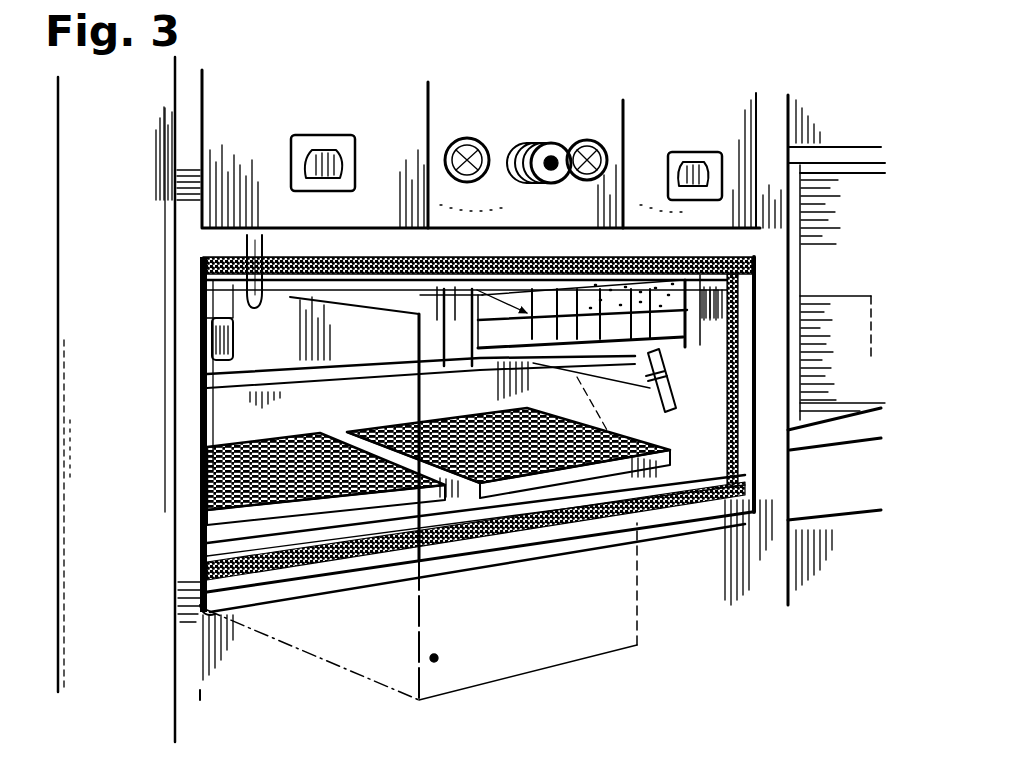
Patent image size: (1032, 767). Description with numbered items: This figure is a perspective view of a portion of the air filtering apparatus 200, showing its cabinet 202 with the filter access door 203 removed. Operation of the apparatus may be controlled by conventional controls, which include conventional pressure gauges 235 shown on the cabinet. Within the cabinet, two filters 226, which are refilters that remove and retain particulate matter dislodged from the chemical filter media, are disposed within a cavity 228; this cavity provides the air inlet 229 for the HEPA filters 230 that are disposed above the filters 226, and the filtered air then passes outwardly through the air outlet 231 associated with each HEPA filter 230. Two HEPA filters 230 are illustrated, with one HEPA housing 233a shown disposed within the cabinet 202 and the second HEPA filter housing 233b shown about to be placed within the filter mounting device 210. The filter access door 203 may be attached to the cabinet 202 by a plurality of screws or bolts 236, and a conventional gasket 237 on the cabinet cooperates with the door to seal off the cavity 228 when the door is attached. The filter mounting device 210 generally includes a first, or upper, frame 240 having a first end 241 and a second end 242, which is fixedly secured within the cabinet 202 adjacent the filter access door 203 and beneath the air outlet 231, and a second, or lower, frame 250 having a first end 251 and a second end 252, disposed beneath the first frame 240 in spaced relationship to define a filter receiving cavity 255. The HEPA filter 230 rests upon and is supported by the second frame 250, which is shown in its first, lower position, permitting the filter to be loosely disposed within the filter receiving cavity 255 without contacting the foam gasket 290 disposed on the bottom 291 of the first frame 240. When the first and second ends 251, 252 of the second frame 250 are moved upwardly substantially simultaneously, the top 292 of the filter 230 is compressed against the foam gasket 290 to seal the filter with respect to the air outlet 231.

The air filtering apparatus 200 is at (752, 80).
The cabinet 202 is at (190, 710).
The filter access door 203 is at (568, 647).
The filter mounting device 210 is at (696, 246).
The filter 226 is at (200, 562).
The cavity 228 is at (200, 512).
The air inlet 229 is at (357, 410).
The HEPA filter 230 is at (841, 326).
The air outlet 231 is at (437, 353).
The HEPA housing 233a is at (198, 372).
The HEPA filter housing 233b is at (856, 352).
The pressure gauges 235 is at (455, 137).
The screws or bolts 236 is at (397, 310).
The gasket 237 is at (200, 619).
The first frame 240 is at (213, 320).
The first end 241 is at (197, 263).
The second end 242 is at (768, 296).
The second frame 250 is at (200, 436).
The first end 251 is at (213, 323).
The second end 252 is at (655, 445).
The filter receiving cavity 255 is at (587, 313).
The foam gasket 290 is at (247, 235).
The bottom 291 is at (262, 235).
The top 292 is at (758, 262).